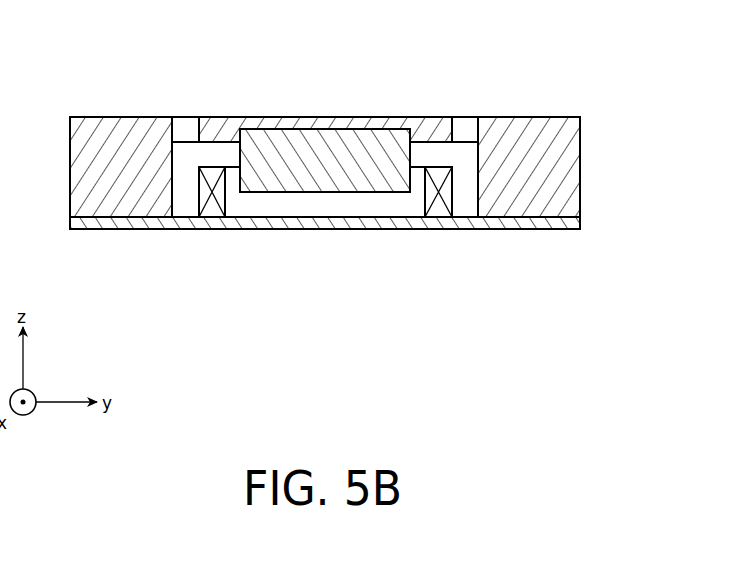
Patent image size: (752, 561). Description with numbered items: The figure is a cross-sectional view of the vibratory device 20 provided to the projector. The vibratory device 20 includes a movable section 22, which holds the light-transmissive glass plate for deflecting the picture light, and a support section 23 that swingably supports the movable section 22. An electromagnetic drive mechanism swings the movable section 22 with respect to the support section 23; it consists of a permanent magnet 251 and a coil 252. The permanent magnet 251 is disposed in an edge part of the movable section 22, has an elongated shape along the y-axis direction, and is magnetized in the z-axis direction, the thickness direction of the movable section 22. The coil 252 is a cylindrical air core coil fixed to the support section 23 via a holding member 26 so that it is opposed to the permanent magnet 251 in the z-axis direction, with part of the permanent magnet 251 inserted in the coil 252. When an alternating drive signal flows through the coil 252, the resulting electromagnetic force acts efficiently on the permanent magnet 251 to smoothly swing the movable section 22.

The vibratory device 20 is at (122, 100).
The movable section 22 is at (437, 128).
The support section 23 is at (581, 153).
The holding member 26 is at (510, 225).
The permanent magnet 251 is at (313, 150).
The coil 252 is at (210, 208).